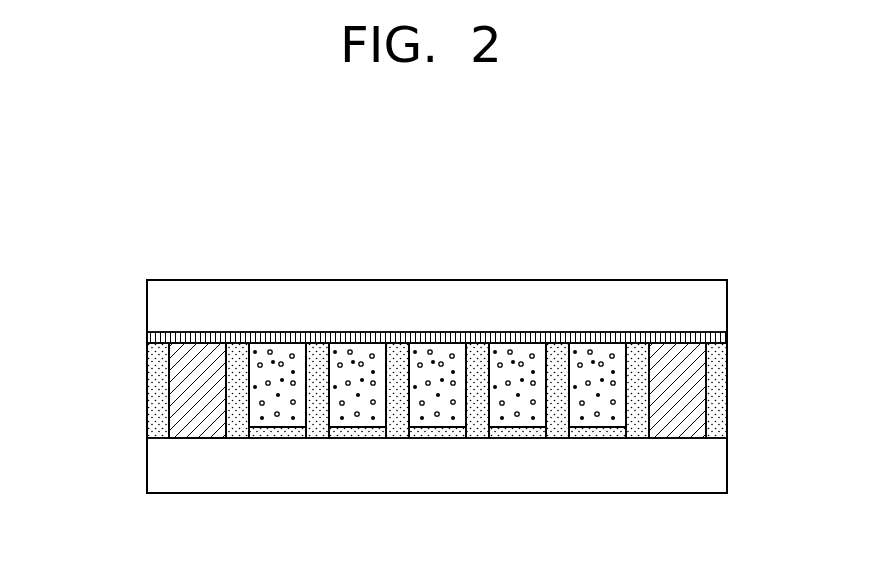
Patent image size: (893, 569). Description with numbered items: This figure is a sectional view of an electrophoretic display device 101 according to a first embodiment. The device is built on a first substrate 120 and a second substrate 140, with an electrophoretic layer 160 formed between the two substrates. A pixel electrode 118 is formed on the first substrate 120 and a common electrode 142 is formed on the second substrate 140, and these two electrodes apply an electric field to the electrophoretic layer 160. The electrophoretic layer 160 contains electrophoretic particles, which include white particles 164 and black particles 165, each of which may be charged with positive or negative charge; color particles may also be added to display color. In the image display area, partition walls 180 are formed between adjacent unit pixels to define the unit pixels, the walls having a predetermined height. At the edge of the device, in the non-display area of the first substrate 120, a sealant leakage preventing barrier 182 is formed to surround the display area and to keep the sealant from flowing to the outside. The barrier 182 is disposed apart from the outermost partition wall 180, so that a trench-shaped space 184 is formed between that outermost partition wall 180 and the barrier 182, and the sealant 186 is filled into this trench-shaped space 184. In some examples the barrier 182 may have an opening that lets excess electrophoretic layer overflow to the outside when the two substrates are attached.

The electrophoretic display device 101 is at (702, 253).
The pixel electrode 118 is at (433, 432).
The first substrate 120 is at (153, 466).
The second substrate 140 is at (153, 305).
The common electrode 142 is at (465, 342).
The electrophoretic layer 160 is at (350, 413).
The white particles 164 is at (372, 354).
The black particles 165 is at (353, 361).
The partition walls 180 is at (237, 428).
The sealant leakage preventing barrier 182 is at (152, 385).
The trench-shaped space 184 is at (201, 346).
The sealant 186 is at (195, 425).